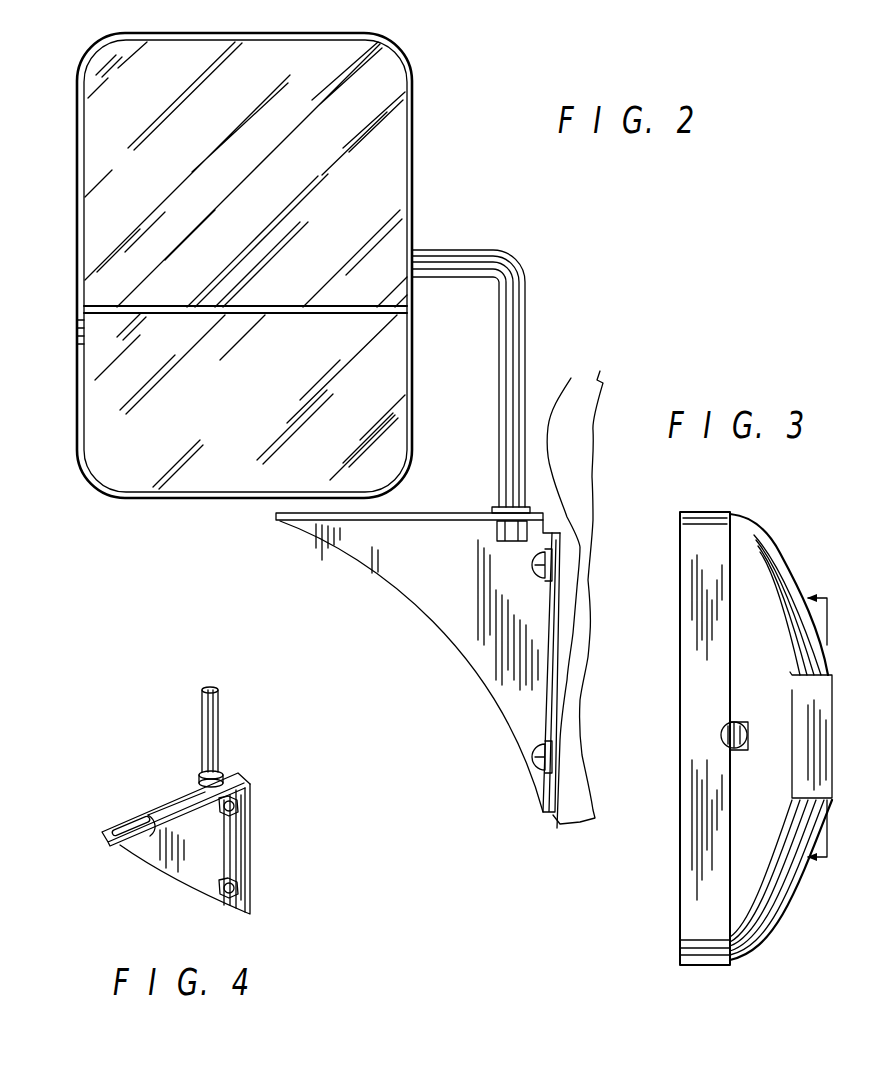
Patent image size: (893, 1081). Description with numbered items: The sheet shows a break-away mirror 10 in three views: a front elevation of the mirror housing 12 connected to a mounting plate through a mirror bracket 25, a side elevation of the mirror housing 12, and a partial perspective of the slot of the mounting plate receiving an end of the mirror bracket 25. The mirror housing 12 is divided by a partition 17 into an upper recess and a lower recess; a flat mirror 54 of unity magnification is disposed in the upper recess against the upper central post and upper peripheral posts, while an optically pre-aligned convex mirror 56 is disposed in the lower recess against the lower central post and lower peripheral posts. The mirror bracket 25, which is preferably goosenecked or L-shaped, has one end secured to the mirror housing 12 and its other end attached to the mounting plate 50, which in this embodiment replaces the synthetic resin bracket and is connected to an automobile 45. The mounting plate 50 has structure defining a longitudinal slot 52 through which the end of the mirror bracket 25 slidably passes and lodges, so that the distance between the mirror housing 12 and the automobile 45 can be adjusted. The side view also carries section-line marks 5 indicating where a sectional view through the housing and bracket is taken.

In FIG. 2, the break-away mirror 10 is at (425, 240).
In FIG. 3, the mirror housing 12 is at (763, 526).
In FIG. 2, the partition 17 is at (170, 308).
In FIG. 2, the mirror bracket 25 is at (487, 283).
In FIG. 3, the mirror bracket 25 is at (742, 722).
In FIG. 4, the mirror bracket 25 is at (208, 748).
In FIG. 2, the automobile 45 is at (575, 592).
In FIG. 2, the mounting plate 50 is at (455, 655).
In FIG. 4, the mounting plate 50 is at (252, 845).
In FIG. 4, the longitudinal slot 52 is at (124, 845).
In FIG. 2, the flat mirror 54 is at (172, 147).
In FIG. 2, the convex mirror 56 is at (242, 378).
In FIG. 3, the section line 5- 5 is at (817, 733).